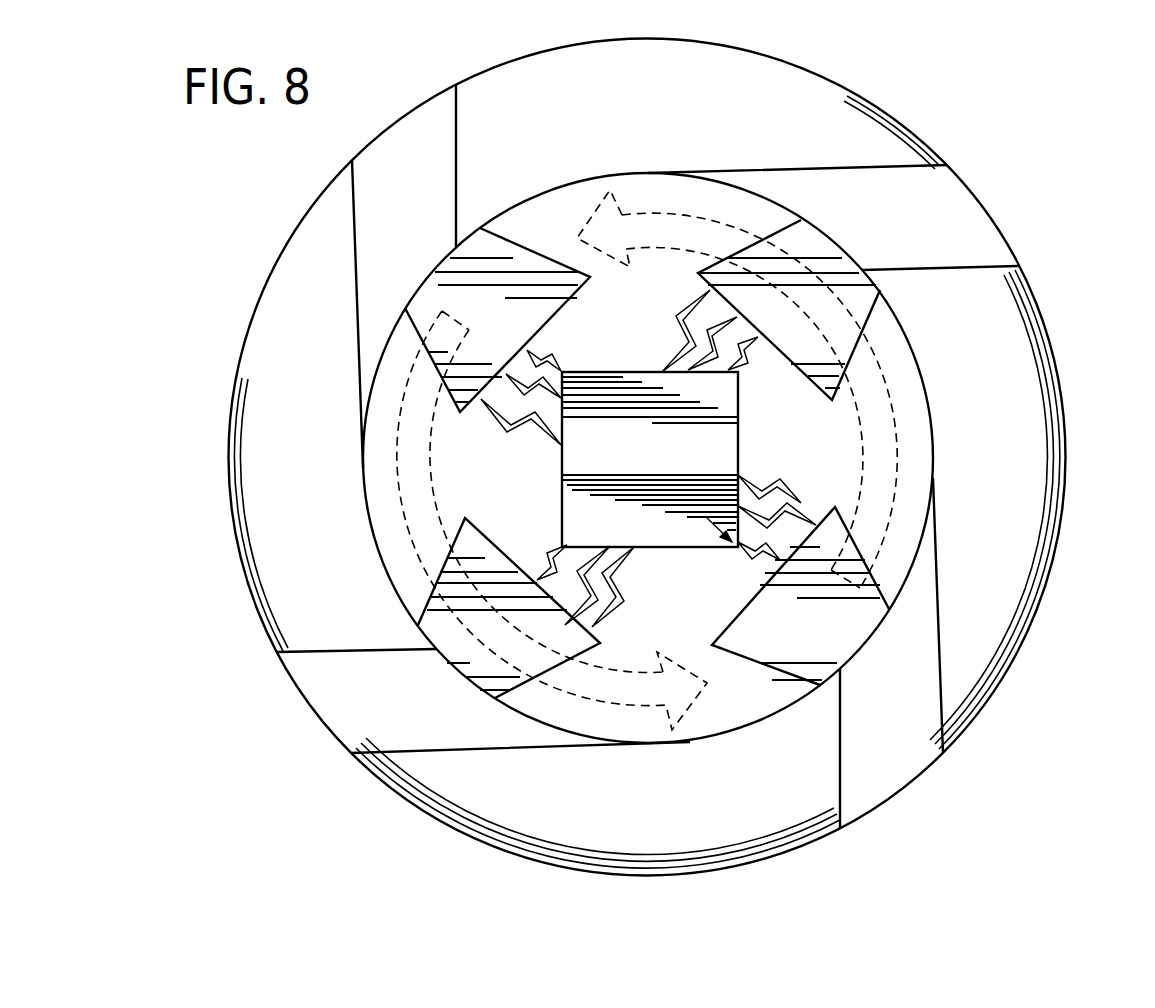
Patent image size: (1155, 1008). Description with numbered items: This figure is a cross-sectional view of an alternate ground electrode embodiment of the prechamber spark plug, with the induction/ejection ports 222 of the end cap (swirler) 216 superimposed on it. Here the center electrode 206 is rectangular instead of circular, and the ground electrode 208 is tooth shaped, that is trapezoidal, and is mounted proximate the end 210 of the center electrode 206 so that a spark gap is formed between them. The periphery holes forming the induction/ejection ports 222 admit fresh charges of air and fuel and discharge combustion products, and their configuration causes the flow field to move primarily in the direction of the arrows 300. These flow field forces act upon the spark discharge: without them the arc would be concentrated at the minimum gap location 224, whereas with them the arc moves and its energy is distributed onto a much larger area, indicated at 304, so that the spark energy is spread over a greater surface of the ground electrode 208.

The center electrode 206 is at (562, 473).
The ground electrode 208 is at (848, 260).
The end of the center electrode 210 is at (670, 470).
The end cap (swirler) 216 is at (1017, 523).
The induction/ejection ports 222 is at (401, 167).
The minimum gap location 224 is at (778, 592).
The arrows representing flow field forces 300 is at (418, 556).
The larger area of spark energy distribution 304 is at (803, 468).